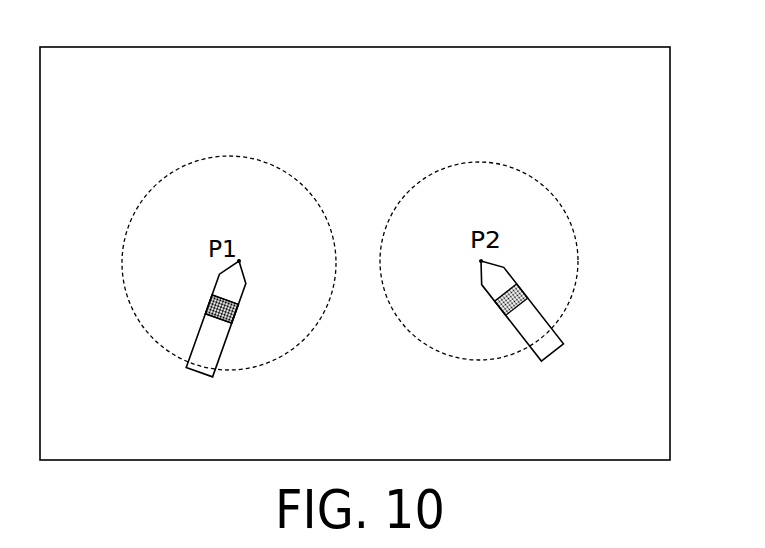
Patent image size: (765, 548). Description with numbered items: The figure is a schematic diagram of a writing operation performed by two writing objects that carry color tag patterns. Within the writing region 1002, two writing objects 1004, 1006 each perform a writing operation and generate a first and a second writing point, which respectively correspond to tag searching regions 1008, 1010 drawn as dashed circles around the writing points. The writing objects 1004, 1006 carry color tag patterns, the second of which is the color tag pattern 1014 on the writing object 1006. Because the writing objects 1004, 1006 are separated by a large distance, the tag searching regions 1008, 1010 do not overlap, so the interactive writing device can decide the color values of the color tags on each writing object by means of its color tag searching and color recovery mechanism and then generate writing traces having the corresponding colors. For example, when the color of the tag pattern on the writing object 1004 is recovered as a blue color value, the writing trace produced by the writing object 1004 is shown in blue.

The writing region 1002 is at (400, 47).
The writing object 1004 is at (166, 315).
The writing object 1006 is at (533, 303).
The tag searching region 1008 is at (199, 157).
The tag searching region 1010 is at (540, 180).
The color tag pattern 1014 is at (522, 285).